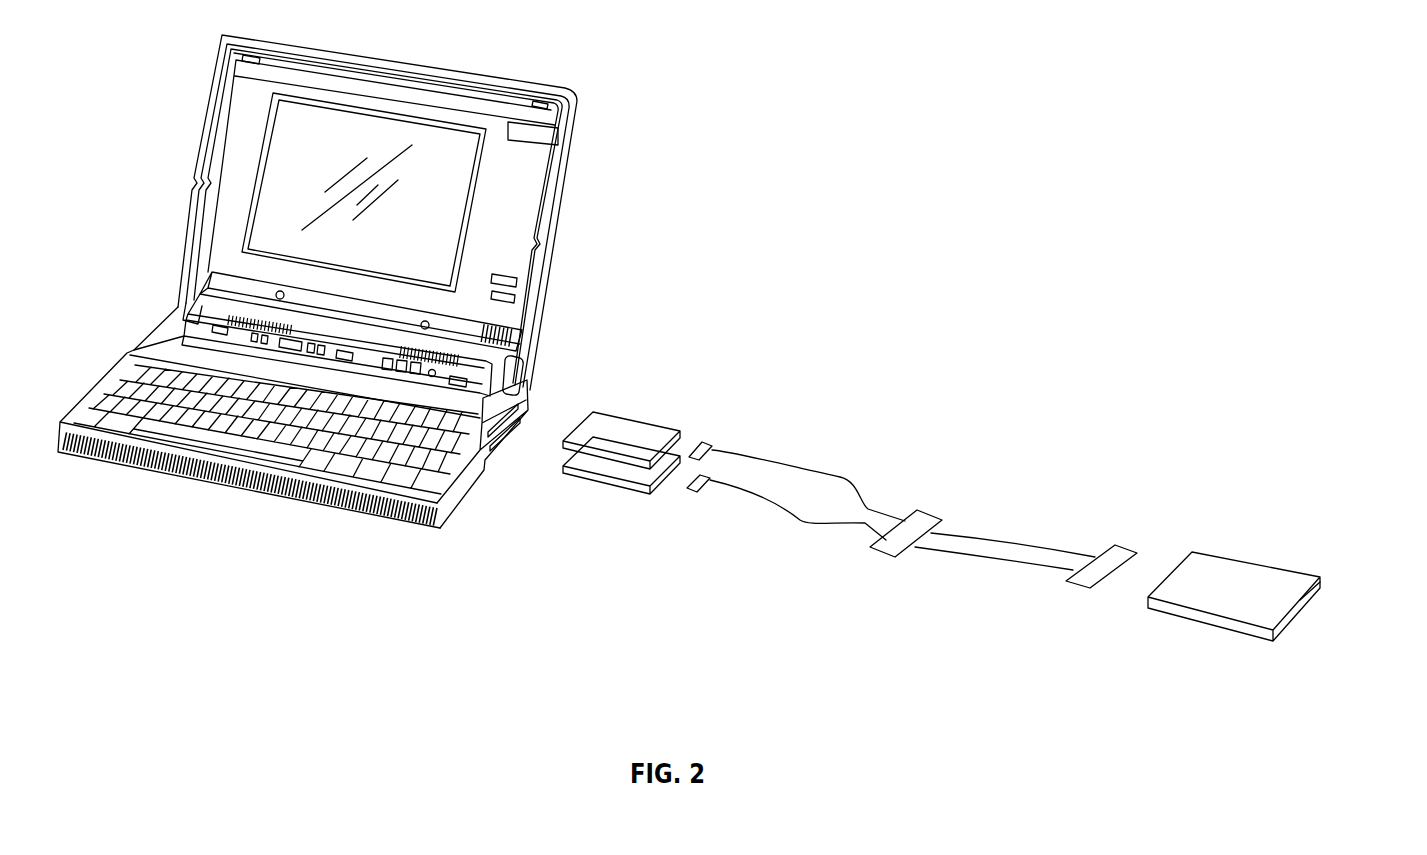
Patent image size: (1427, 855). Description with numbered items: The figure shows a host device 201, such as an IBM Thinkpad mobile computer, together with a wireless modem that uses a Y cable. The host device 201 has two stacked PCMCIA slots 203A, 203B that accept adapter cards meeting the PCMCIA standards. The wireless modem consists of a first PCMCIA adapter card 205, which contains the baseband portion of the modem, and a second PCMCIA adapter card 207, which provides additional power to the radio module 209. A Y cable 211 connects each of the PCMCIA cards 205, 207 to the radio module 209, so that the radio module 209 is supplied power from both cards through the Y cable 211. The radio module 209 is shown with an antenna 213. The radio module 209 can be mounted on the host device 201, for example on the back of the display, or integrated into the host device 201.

The host device 201 is at (578, 117).
The PCMCIA slot 203A is at (480, 450).
The PCMCIA slot 203B is at (527, 400).
The first PCMCIA adapter card 205 is at (637, 421).
The second PCMCIA adapter card 207 is at (602, 482).
The radio module 209 is at (1253, 563).
The Y cable 211 is at (995, 543).
The antenna 213 is at (1298, 605).